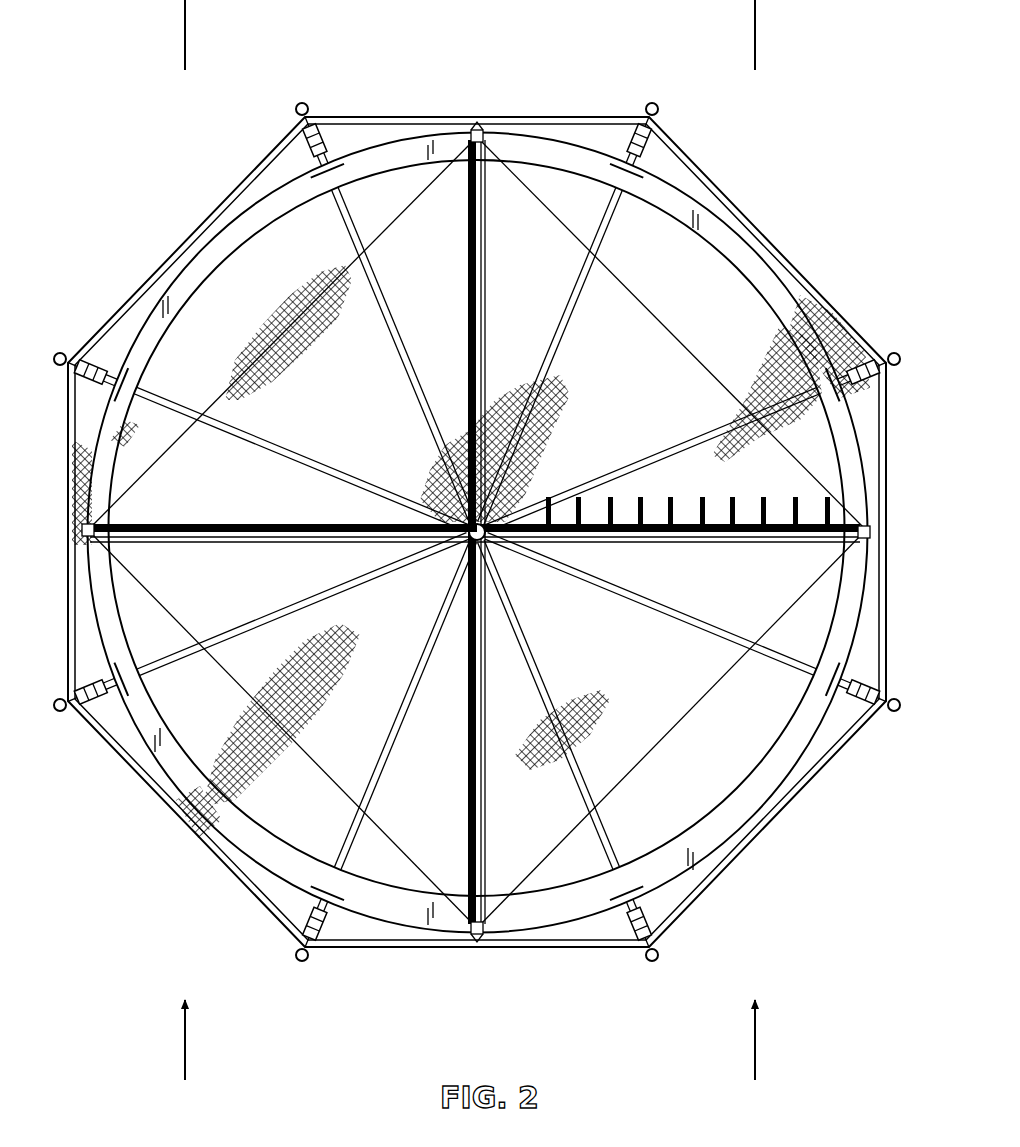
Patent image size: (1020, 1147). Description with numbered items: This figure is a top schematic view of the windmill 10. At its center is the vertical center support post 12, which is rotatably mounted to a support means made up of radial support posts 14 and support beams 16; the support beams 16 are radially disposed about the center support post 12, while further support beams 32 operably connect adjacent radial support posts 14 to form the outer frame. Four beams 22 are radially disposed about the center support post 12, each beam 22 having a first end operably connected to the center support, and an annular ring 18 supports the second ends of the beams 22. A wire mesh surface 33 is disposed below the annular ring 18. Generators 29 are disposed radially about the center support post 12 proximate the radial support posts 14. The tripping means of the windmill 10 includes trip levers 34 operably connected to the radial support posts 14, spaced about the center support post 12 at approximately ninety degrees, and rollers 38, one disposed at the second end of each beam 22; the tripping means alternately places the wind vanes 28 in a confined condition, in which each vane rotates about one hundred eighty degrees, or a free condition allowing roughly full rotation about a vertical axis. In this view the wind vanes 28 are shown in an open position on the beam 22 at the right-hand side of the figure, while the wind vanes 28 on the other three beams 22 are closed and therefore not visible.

The windmill 10 is at (492, 68).
The vertical center support post 12 is at (440, 500).
The radial support posts 14 is at (304, 102).
The support beams 16 is at (388, 308).
The annular ring 18 is at (226, 228).
The beams 22 is at (490, 322).
The wind vanes 28 is at (578, 502).
The generators 29 is at (326, 120).
The support beams 32 is at (168, 264).
The wire mesh surface 33 is at (192, 830).
The trip lever 34 is at (626, 152).
The rollers 38 is at (472, 126).